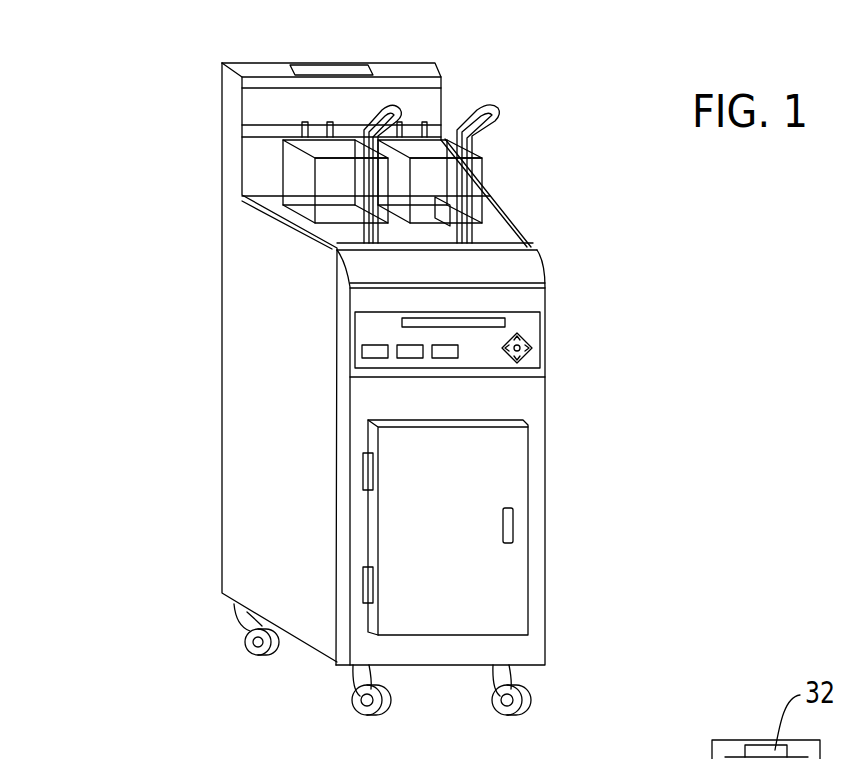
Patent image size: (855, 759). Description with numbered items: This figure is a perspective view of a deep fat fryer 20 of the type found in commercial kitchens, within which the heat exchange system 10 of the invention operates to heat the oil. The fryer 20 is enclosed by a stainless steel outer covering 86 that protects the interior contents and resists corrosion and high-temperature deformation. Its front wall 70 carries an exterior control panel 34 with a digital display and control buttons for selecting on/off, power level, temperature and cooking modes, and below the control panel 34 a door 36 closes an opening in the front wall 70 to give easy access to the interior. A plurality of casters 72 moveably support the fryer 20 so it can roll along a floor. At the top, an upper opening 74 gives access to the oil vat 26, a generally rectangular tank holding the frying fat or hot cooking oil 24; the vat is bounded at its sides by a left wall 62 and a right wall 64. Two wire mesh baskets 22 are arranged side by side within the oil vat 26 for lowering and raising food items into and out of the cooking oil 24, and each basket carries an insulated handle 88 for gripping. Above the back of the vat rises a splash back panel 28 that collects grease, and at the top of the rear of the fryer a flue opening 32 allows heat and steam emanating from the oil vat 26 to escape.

The heat exchange system 10 is at (80, 106).
The deep fat fryer 20 is at (188, 466).
The baskets 22 is at (300, 180).
The cooking oil 24 is at (507, 212).
The oil vat 26 is at (412, 208).
The splash back panel 28 is at (257, 105).
The flue opening 32 is at (358, 62).
The control panel 34 is at (534, 340).
The door 36 is at (470, 517).
The left wall 62 is at (240, 197).
The right wall 64 is at (515, 240).
The front wall 70 is at (528, 298).
The casters 72 is at (247, 647).
The upper opening 74 is at (500, 243).
The outer covering 86 is at (248, 336).
The insulated handles 88 is at (488, 108).